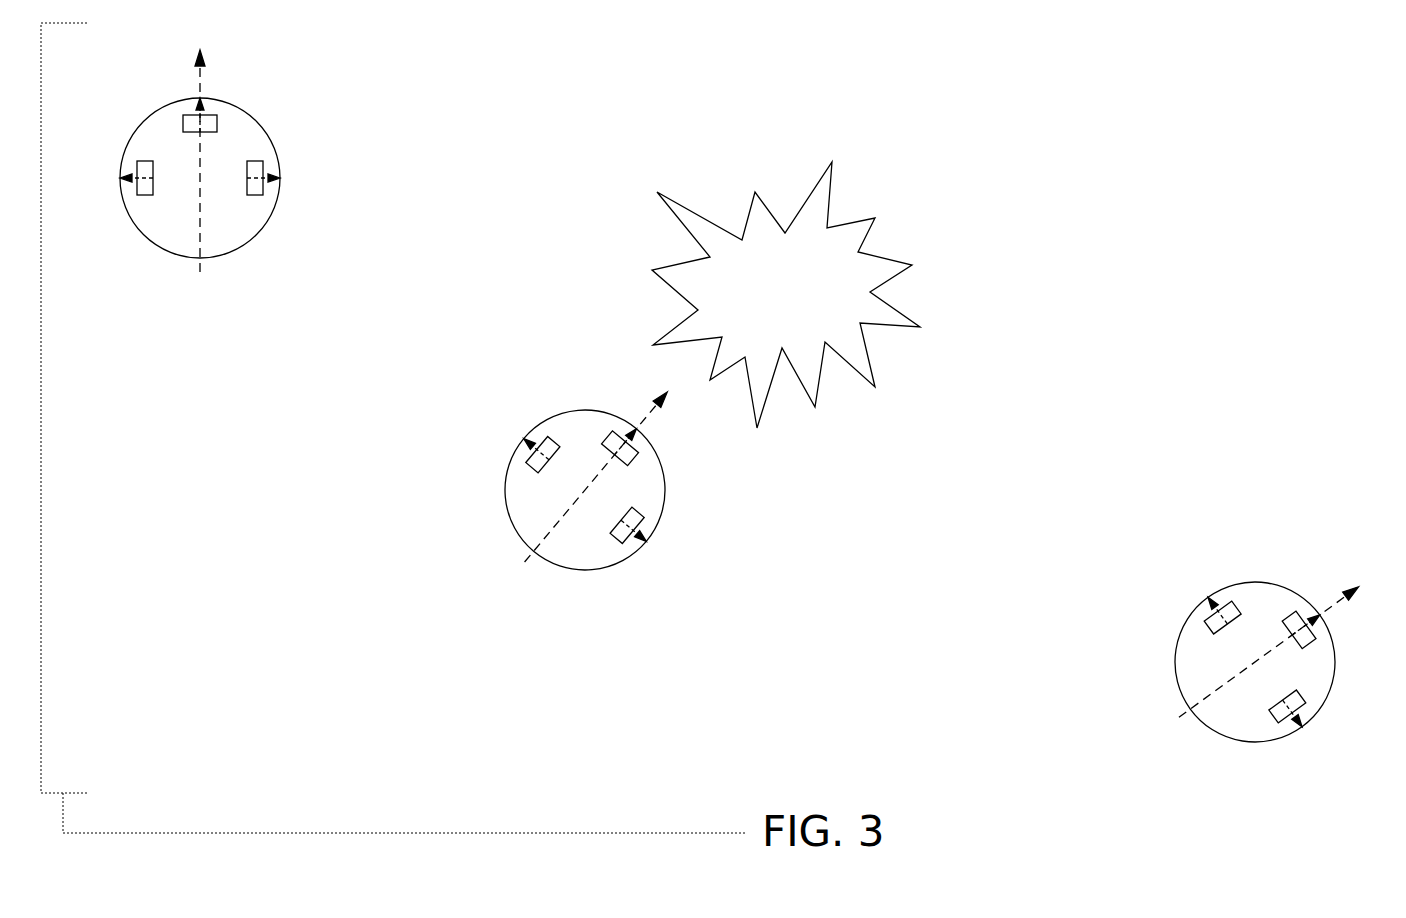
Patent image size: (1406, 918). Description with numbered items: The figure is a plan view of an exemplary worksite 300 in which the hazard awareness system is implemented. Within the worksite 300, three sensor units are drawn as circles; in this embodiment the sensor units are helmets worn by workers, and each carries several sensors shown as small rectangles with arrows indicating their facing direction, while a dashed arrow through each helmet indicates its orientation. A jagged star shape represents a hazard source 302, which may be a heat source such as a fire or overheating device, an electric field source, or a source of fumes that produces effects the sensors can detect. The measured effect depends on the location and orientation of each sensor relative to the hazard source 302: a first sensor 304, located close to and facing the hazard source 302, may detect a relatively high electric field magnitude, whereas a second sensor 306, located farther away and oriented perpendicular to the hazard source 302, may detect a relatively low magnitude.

The worksite 300 is at (1033, 122).
The hazard source 302 is at (872, 217).
The first sensor 304 is at (633, 457).
The second sensor 306 is at (1317, 643).